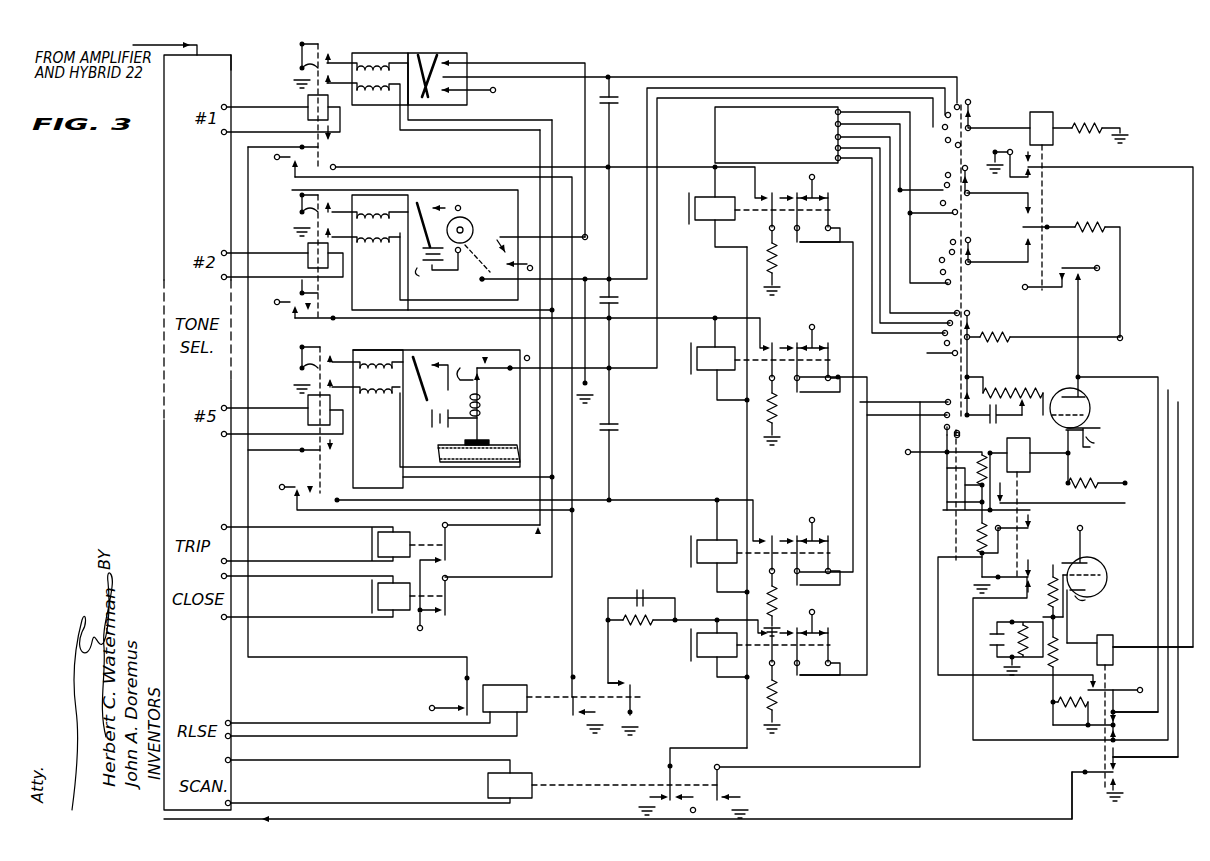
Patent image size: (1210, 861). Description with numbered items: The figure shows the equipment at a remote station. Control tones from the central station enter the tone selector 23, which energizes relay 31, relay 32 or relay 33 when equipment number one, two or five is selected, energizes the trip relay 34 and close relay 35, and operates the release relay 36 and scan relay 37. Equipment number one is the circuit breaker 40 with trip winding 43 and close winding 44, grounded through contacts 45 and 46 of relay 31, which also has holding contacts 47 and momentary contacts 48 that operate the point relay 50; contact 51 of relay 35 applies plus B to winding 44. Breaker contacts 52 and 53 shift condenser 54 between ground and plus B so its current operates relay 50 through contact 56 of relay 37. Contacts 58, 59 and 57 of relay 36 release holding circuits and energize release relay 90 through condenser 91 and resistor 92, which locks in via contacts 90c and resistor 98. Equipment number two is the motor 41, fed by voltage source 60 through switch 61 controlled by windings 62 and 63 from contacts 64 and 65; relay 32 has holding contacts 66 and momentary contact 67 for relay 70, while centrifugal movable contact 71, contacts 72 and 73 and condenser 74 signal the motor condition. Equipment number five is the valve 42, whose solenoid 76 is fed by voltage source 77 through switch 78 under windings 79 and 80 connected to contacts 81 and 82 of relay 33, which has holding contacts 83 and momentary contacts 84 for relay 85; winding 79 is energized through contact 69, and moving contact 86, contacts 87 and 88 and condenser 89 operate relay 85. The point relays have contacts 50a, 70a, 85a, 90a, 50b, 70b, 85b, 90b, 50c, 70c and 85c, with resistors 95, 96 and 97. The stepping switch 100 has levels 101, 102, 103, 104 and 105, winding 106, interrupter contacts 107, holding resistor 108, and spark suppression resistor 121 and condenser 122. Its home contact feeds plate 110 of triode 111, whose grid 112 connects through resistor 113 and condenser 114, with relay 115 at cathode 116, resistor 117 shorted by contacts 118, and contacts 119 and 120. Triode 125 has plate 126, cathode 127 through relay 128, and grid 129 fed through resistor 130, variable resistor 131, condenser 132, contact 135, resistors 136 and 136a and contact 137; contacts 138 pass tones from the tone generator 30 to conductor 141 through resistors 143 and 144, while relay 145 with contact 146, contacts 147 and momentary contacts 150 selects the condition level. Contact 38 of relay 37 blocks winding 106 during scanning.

The tone selector 23 is at (243, 61).
The tone generator 30 is at (715, 124).
The relay 31 is at (305, 102).
The relay 32 is at (294, 250).
The relay 33 is at (299, 403).
The trip relay 34 is at (366, 549).
The close relay 35 is at (366, 604).
The release relay 36 is at (508, 676).
The scan relay 37 is at (522, 776).
The contact of scan relay 38 is at (726, 786).
The circuit breaker 40 is at (420, 56).
The motor 41 is at (460, 220).
The valve 42 is at (485, 440).
The trip winding 43 is at (381, 104).
The close winding 44 is at (375, 53).
The contact of relay 31 45 is at (300, 66).
The contact of relay 31 46 is at (330, 48).
The holding contacts of relay 31 47 is at (334, 144).
The momentarily closing contacts of relay 31 48 is at (332, 162).
The point relay 50 is at (692, 194).
The contact of relay 50 50a is at (832, 212).
The contact of relay 50 50b is at (800, 246).
The holding contact of relay 50 50c is at (755, 215).
The contact of relay 35 51 is at (447, 600).
The breaker contact 52 is at (466, 57).
The breaker contact 53 is at (458, 94).
The condenser 54 is at (610, 105).
The contact of relay 37 56 is at (675, 778).
The contacts of release relay 57 is at (630, 693).
The contact of release relay 58 is at (464, 692).
The contact of release relay 59 is at (571, 692).
The voltage source 60 is at (429, 268).
The switch 61 is at (420, 204).
The winding 62 is at (398, 196).
The winding 63 is at (386, 246).
The contact of relay 32 64 is at (292, 194).
The contact of relay 32 65 is at (292, 214).
The holding contacts of relay 32 66 is at (300, 292).
The momentarily closing contact of relay 32 67 is at (306, 308).
The contact of relay 34 69 is at (450, 548).
The point relay 70 is at (696, 354).
The contact of relay 70 70a is at (826, 382).
The contact of relay 70 70b is at (798, 334).
The holding contact of relay 70 70c is at (764, 365).
The movable contact 71 is at (480, 278).
The contact 72 is at (489, 246).
The contact 73 is at (539, 259).
The condenser 74 is at (614, 297).
The solenoid 76 is at (487, 404).
The voltage source 77 is at (438, 426).
The switch 78 is at (416, 359).
The winding 79 is at (396, 350).
The winding 80 is at (386, 402).
The contact of relay 33 81 is at (300, 347).
The contact of relay 33 82 is at (300, 364).
The holding contacts of relay 33 83 is at (304, 456).
The momentarily closing contacts of relay 33 84 is at (308, 483).
The point relay 85 is at (694, 554).
The contact of relay 85 85a is at (830, 574).
The contact of relay 85 85b is at (800, 530).
The holding contact of relay 85 85c is at (764, 558).
The moving contact 86 is at (470, 358).
The contact 87 is at (479, 376).
The contact 88 is at (490, 353).
The condenser 89 is at (618, 422).
The release relay 90 is at (694, 649).
The contact of relay 90 90a is at (846, 645).
The contact of relay 90 90b is at (802, 670).
The holding contact of relay 90 90c is at (760, 651).
The condenser 91 is at (640, 590).
The discharging resistor 92 is at (646, 624).
The resistor 95 is at (776, 264).
The resistor 96 is at (780, 412).
The resistor 97 is at (776, 596).
The resistor 98 is at (792, 708).
The stepping switch 100 is at (940, 477).
The contact level 101 is at (940, 422).
The contact level 102 is at (960, 346).
The contact level 103 is at (961, 275).
The contact level 104 is at (965, 200).
The contact level 105 is at (968, 130).
The energizing winding 106 is at (922, 490).
The interrupter contacts 107 is at (928, 504).
The resistor 108 is at (964, 534).
The plate 110 is at (1100, 382).
The triode tube section 111 is at (1082, 452).
The grid 112 is at (1080, 415).
The resistor 113 is at (1036, 380).
The condenser 114 is at (998, 419).
The relay 115 is at (1025, 465).
The cathode 116 is at (1106, 436).
The resistor 117 is at (1113, 477).
The contacts of relay 115 118 is at (1021, 500).
The contact of relay 115 119 is at (1023, 524).
The contact of relay 115 120 is at (950, 586).
The resistor 121 is at (944, 462).
The condenser 122 is at (971, 436).
The triode tube section 125 is at (1100, 583).
The plate 126 is at (1096, 546).
The cathode 127 is at (1098, 597).
The relay 128 is at (1110, 646).
The grid 129 is at (1100, 562).
The resistor 130 is at (1048, 570).
The variable resistor 131 is at (1026, 619).
The condenser 132 is at (989, 637).
The contact of relay 128 135 is at (1104, 680).
The resistor 136 is at (1052, 706).
The resistor 136a is at (1080, 631).
The contact of relay 128 137 is at (1117, 720).
The contacts of relay 128 138 is at (1092, 766).
The conductor 141 is at (1064, 798).
The resistor 143 is at (1006, 325).
The resistor 144 is at (1088, 224).
The relay 145 is at (1052, 120).
The contact of relay 145 146 is at (1050, 224).
The contacts of relay 145 147 is at (1052, 166).
The momentarily closing contacts 150 is at (1050, 278).